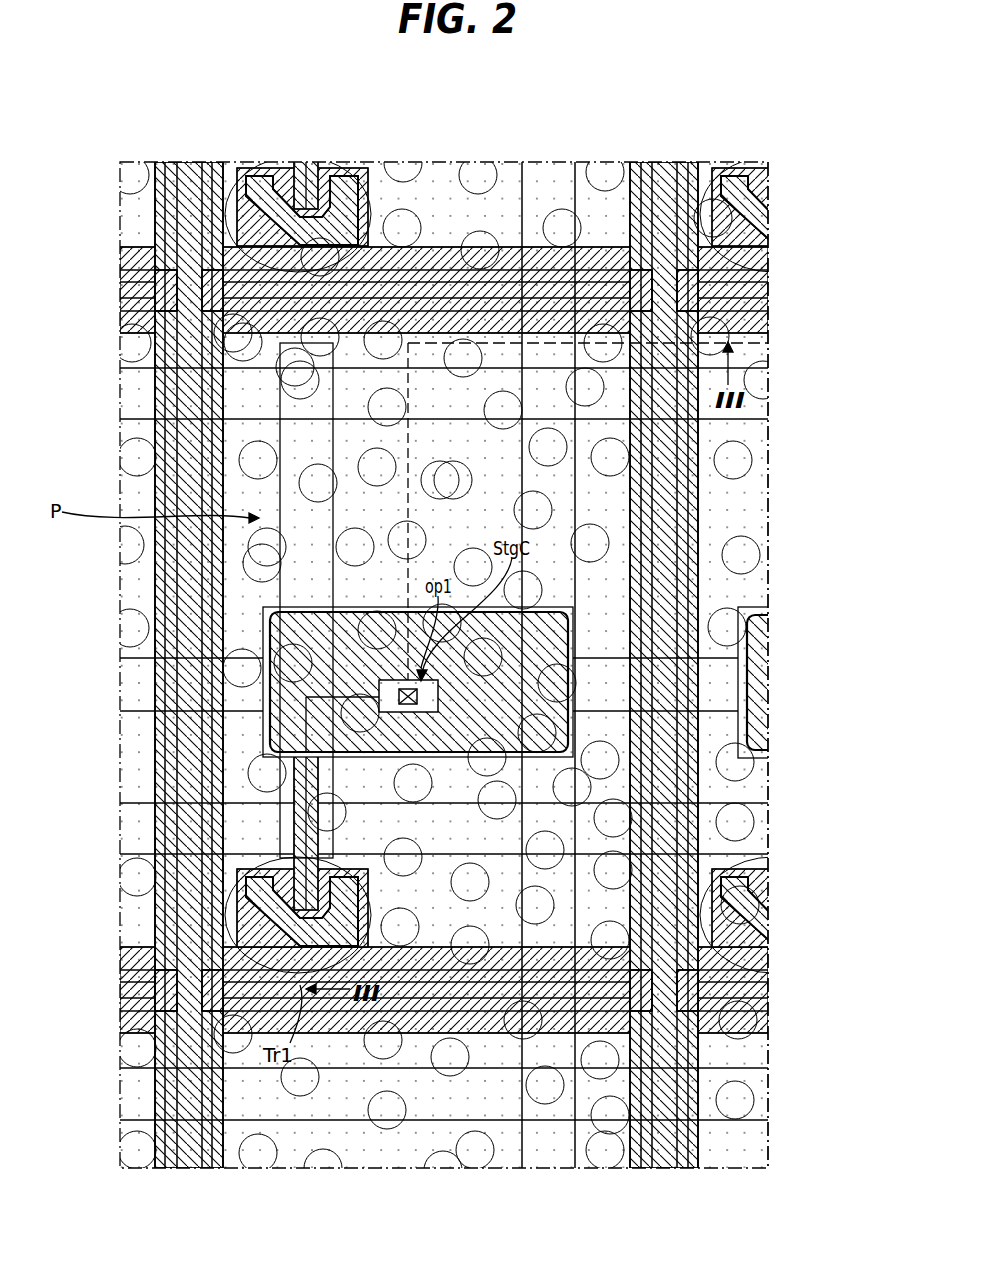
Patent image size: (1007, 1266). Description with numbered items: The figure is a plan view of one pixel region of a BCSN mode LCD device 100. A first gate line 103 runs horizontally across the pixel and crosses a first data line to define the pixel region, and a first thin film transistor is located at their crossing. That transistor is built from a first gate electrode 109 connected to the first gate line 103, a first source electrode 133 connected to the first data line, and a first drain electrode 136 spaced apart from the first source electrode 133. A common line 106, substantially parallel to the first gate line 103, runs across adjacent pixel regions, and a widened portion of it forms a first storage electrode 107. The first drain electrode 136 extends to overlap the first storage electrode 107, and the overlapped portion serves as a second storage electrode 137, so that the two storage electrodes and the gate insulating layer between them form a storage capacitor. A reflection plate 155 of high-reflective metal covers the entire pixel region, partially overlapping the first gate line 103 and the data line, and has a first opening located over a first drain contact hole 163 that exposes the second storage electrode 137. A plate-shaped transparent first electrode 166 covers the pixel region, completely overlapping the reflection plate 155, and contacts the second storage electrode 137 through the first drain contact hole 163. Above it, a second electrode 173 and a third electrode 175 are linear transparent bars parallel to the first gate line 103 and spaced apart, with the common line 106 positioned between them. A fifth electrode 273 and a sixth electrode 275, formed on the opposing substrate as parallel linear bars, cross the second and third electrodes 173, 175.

The BCSN mode LCD device 100 is at (692, 120).
The first gate line 103 is at (130, 958).
The common line 106 is at (145, 670).
The first storage electrode 107 is at (573, 615).
The first gate electrode 109 is at (264, 835).
The first source electrode 133 is at (368, 903).
The first drain electrode 136 is at (250, 880).
The second storage electrode 137 is at (748, 650).
The reflection plate 155 is at (740, 665).
The first drain contact hole 163 is at (401, 680).
The first electrode 166 is at (645, 530).
The second electrode 173 is at (748, 828).
The third electrode 175 is at (745, 394).
The fifth electrode 273 is at (275, 407).
The sixth electrode 275 is at (577, 192).